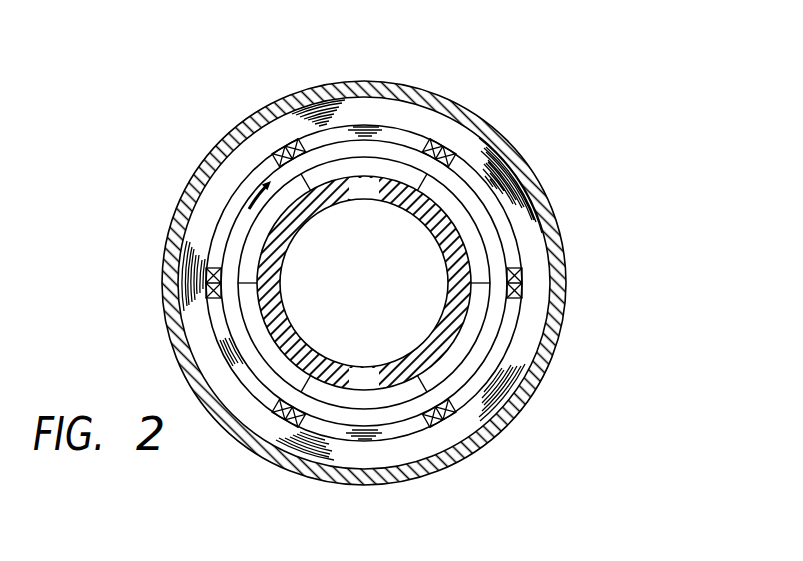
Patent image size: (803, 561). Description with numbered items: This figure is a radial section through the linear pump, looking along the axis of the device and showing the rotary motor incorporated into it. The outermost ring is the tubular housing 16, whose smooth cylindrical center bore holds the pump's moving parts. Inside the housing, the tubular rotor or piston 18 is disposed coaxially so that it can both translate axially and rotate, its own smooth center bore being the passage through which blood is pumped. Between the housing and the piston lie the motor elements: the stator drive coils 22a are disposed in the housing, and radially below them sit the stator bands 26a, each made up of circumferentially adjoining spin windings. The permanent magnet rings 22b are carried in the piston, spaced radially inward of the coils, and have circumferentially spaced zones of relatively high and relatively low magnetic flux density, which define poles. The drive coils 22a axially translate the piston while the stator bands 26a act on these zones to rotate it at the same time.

The tubular housing 16 is at (557, 210).
The tubular rotor or piston 18 is at (297, 327).
The stator drive coils 22a is at (368, 115).
The permanent magnet rings 22b is at (460, 193).
The stator bands 26a is at (418, 137).